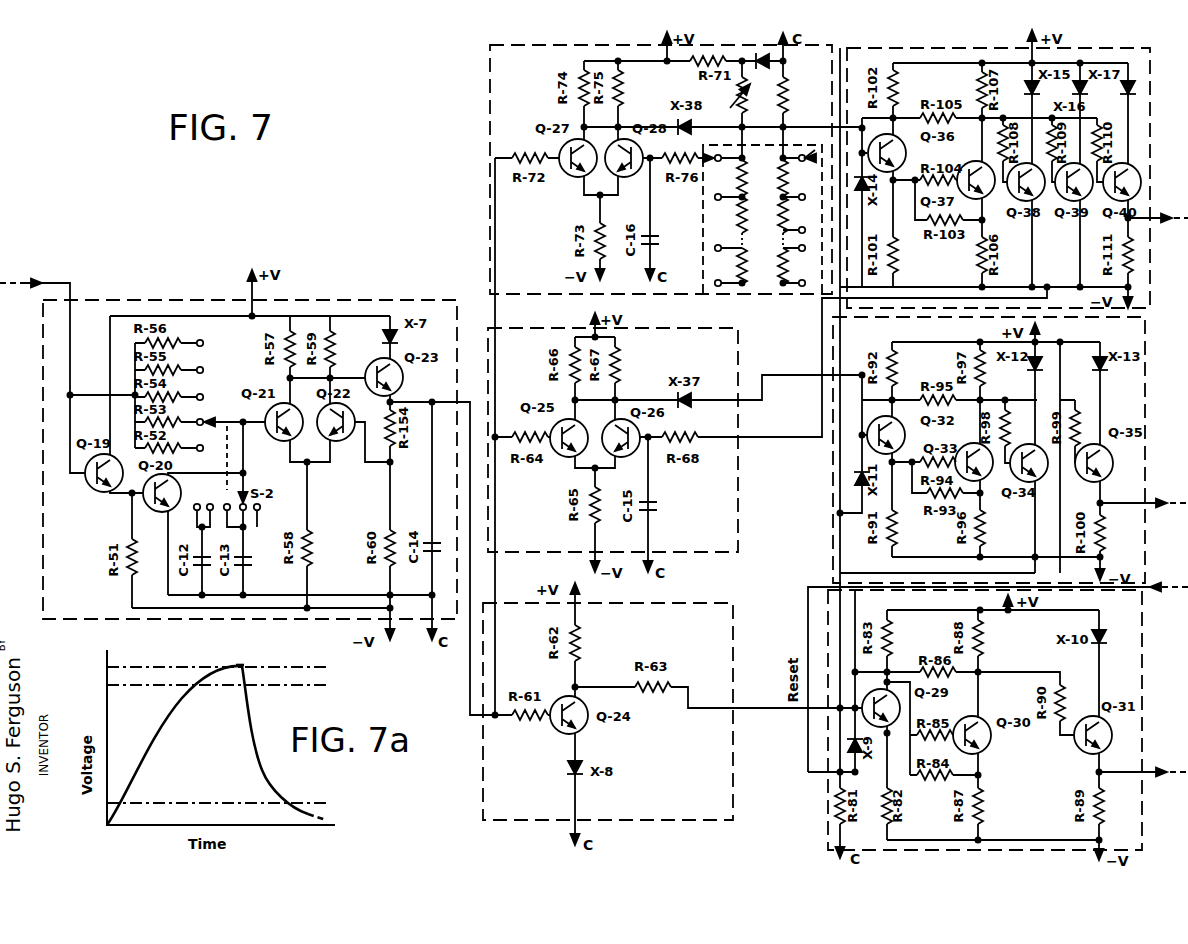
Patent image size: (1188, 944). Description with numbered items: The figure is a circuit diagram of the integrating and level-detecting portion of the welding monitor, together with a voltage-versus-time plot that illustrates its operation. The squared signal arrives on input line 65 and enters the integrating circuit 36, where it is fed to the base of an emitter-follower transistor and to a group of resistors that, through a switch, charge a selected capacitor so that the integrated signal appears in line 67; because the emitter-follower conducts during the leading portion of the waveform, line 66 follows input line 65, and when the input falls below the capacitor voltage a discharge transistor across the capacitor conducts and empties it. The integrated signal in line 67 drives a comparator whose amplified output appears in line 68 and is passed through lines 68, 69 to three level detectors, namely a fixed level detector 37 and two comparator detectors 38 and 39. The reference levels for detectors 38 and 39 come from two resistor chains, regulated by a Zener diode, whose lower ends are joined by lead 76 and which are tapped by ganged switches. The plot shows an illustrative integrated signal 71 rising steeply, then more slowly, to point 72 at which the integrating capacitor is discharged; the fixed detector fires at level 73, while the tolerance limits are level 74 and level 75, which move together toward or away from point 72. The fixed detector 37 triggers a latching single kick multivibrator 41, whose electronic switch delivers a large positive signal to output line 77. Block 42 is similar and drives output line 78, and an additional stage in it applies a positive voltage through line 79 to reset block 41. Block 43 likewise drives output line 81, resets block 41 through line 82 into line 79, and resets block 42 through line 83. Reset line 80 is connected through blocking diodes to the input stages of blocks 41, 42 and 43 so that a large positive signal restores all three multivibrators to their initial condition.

In FIG. 7, the integrating circuit 36 is at (166, 302).
In FIG. 7, the fixed level detector 37 is at (483, 781).
In FIG. 7, the level detector 38 is at (563, 331).
In FIG. 7, the level detector 39 is at (474, 211).
In FIG. 7, the latching single kick multivibrator 41 is at (828, 808).
In FIG. 7, the latching single kick multivibrator block 42 is at (833, 491).
In FIG. 7, the latching single kick multivibrator block 43 is at (945, 49).
In FIG. 7, the input line 65 is at (70, 283).
In FIG. 7, the line 66 is at (120, 498).
In FIG. 7, the line 67 is at (245, 442).
In FIG. 7, the output line 68 is at (453, 402).
In FIG. 7, the output line 69 is at (503, 562).
In FIG. 7a, the integrated signal 71 is at (158, 725).
In FIG. 7a, the point 72 is at (247, 668).
In FIG. 7a, the level 73 is at (233, 803).
In FIG. 7a, the limit level 74 is at (158, 686).
In FIG. 7a, the limit level 75 is at (172, 666).
In FIG. 7, the lead 76 is at (778, 289).
In FIG. 7, the output line 77 is at (1126, 774).
In FIG. 7, the output line 78 is at (1145, 503).
In FIG. 7, the line 79 is at (948, 558).
In FIG. 7, the reset line 80 is at (998, 678).
In FIG. 7, the output line 81 is at (1148, 218).
In FIG. 7, the line 82 is at (1075, 242).
In FIG. 7, the line 83 is at (1031, 246).